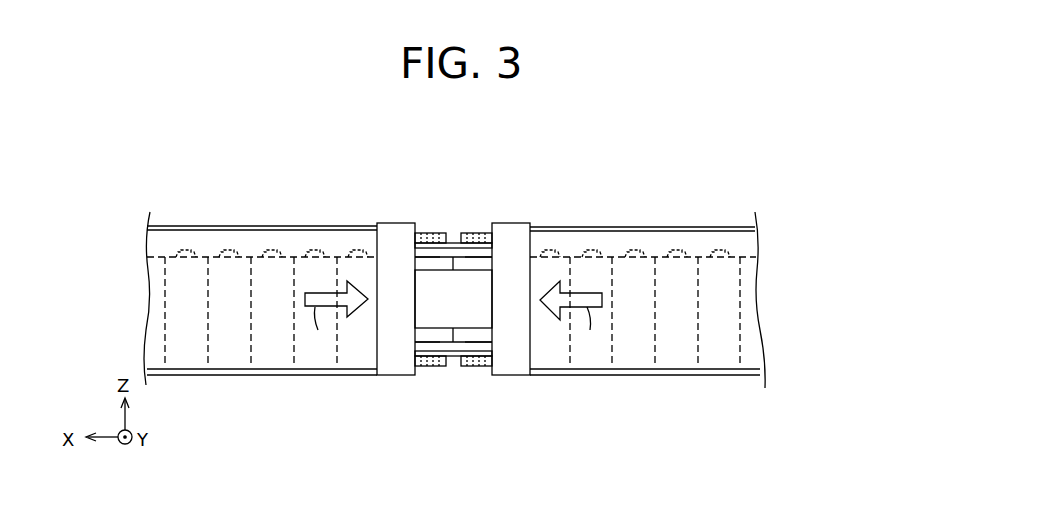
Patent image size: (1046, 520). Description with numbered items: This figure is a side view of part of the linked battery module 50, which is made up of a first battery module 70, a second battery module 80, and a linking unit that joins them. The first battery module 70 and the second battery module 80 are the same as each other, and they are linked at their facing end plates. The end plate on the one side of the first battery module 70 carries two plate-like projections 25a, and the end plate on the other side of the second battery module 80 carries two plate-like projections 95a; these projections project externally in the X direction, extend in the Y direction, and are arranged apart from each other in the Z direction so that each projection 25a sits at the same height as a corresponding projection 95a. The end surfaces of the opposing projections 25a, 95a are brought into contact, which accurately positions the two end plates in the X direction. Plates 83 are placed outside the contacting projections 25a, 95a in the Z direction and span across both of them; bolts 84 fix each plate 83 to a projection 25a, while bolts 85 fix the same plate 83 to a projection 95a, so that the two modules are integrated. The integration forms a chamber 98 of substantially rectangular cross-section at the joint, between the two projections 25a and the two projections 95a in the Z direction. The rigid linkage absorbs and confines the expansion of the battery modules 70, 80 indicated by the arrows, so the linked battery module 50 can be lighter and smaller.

The second battery module 80 is at (212, 223).
The first battery module 70 is at (693, 227).
The linked battery module 50 is at (343, 220).
The chamber 98 is at (457, 301).
The plate 83 is at (450, 263).
The bolt 85 is at (437, 233).
The bolt 84 is at (470, 233).
The projection 95a is at (433, 265).
The projection 25a is at (473, 265).